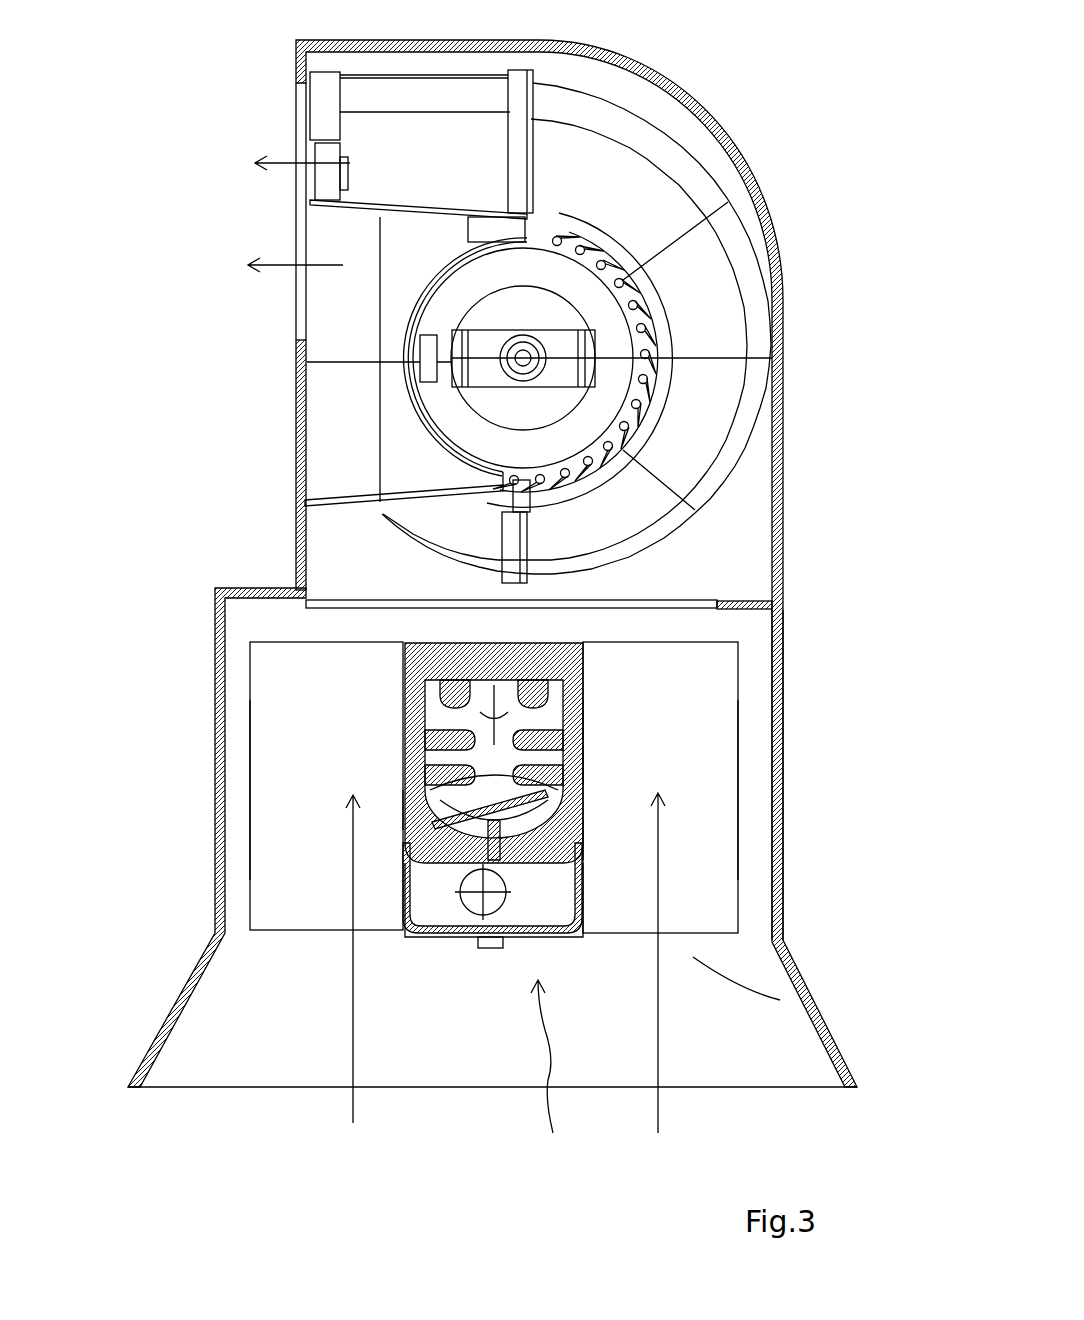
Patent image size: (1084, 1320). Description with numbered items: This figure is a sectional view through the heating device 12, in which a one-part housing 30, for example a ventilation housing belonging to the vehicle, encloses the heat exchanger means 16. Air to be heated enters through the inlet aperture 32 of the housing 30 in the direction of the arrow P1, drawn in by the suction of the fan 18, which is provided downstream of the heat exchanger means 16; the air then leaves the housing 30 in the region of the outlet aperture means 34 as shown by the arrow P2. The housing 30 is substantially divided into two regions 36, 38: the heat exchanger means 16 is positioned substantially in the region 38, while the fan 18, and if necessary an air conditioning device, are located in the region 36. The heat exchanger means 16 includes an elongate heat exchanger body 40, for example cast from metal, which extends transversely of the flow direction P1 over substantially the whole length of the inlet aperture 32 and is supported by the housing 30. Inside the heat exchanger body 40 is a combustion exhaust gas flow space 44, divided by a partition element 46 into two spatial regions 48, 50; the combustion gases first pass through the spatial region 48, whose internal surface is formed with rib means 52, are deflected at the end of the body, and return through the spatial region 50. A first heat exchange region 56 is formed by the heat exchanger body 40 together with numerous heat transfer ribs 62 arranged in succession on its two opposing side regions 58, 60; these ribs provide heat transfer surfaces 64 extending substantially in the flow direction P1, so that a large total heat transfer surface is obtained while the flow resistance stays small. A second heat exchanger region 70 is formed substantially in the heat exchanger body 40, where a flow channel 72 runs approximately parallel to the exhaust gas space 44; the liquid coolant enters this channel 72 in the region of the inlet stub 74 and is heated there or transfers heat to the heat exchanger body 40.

The heating device 12 is at (185, 35).
The heat exchanger means 16 is at (653, 625).
The fan 18 is at (680, 143).
The housing 30 is at (215, 767).
The inlet aperture 32 is at (727, 1060).
The outlet aperture means 34 is at (297, 317).
The region 36 is at (762, 445).
The region 38 is at (762, 763).
The heat exchanger body 40 is at (587, 737).
The combustion exhaust gas flow space 44 is at (587, 693).
The partition element 46 is at (407, 767).
The spatial region 48 is at (407, 683).
The spatial region 50 is at (587, 847).
The rib means 52 is at (410, 653).
The first heat exchange region 56 is at (701, 969).
The side region 58 is at (587, 780).
The side region 60 is at (400, 813).
The heat transfer ribs 62 is at (740, 918).
The heat transfer surfaces 64 is at (715, 885).
The second heat exchanger region 70 is at (555, 1078).
The flow channel 72 is at (407, 933).
The inlet stub 74 is at (437, 933).
The arrow P1 is at (353, 1100).
The arrow P2 is at (273, 157).